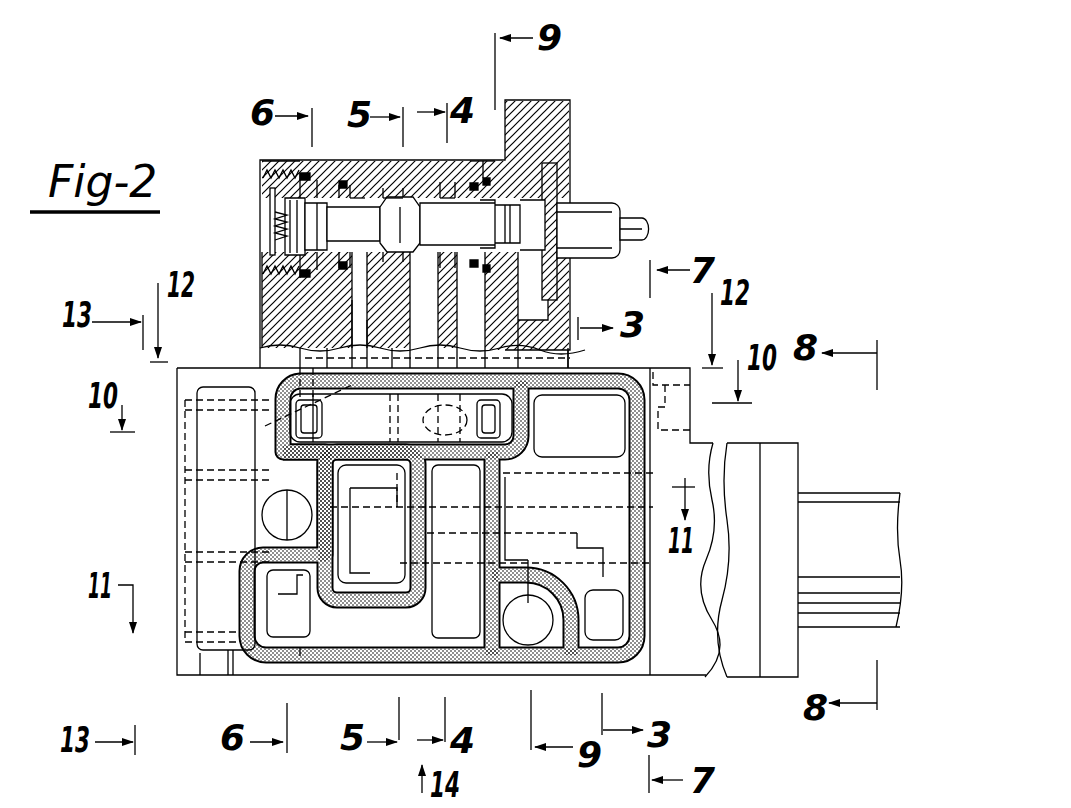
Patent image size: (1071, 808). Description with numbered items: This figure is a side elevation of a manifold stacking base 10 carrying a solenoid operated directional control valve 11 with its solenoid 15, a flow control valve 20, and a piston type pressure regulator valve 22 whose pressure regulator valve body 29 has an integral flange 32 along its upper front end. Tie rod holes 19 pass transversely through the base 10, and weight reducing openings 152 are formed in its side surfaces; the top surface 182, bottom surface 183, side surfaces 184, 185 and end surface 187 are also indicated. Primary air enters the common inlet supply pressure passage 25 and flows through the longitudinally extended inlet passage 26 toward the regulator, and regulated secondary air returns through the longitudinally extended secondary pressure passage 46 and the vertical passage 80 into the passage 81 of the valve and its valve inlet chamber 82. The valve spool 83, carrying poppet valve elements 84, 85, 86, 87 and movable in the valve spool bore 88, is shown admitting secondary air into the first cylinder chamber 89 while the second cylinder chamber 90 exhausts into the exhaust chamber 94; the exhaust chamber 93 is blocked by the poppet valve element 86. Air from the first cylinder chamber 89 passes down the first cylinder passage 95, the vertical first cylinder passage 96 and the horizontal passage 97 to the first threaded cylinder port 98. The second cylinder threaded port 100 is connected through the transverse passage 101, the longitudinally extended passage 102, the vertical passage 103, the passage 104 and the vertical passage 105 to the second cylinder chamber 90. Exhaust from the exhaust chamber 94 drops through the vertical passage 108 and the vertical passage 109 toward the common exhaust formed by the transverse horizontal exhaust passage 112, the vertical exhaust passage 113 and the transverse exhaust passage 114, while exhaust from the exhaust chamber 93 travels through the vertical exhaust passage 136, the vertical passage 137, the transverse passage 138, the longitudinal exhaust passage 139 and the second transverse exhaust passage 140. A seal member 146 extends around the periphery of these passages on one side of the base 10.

The manifold stacking base 10 is at (172, 668).
The solenoid operated directional control valve 11 is at (258, 179).
The solenoid 15 is at (606, 196).
The tie rod holes 19 is at (262, 519).
The flow control valve 20 is at (665, 395).
The pressure regulator valve 22 is at (789, 438).
The common inlet supply pressure passage 25 is at (380, 585).
The longitudinally extended inlet passage 26 is at (452, 560).
The pressure regulator valve body 29 is at (743, 442).
The integral flange 32 is at (686, 374).
The longitudinally extended secondary pressure passage 46 is at (597, 463).
The vertical passage 80 is at (397, 518).
The passage 81 is at (353, 343).
The valve inlet chamber 82 is at (452, 200).
The valve spool 83 is at (406, 210).
The poppet valve element 84 is at (305, 243).
The poppet valve element 85 is at (462, 224).
The poppet valve element 86 is at (330, 226).
The poppet valve element 87 is at (590, 224).
The valve spool bore 88 is at (395, 192).
The first cylinder chamber 89 is at (357, 183).
The second cylinder chamber 90 is at (480, 160).
The exhaust chamber 93 is at (300, 163).
The exhaust chamber 94 is at (490, 160).
The first cylinder passage 95 is at (357, 327).
The vertical first cylinder passage 96 is at (265, 426).
The horizontal passage 97 is at (268, 440).
The first threaded cylinder port 98 is at (197, 392).
The second cylinder threaded port 100 is at (177, 560).
The transverse passage 101 is at (280, 608).
The longitudinally extended passage 102 is at (338, 632).
The vertical passage 103 is at (468, 505).
The passage 104 is at (510, 475).
The vertical passage 105 is at (540, 340).
The vertical passage 108 is at (515, 327).
The vertical passage 109 is at (540, 400).
The transverse horizontal exhaust passage 112 is at (583, 440).
The vertical exhaust passage 113 is at (618, 458).
The transverse exhaust passage 114 is at (600, 610).
The vertical exhaust passage 136 is at (307, 307).
The vertical passage 137 is at (305, 358).
The transverse passage 138 is at (318, 422).
The longitudinal exhaust passage 139 is at (273, 458).
The second transverse exhaust passage 140 is at (401, 405).
The seal member 146 is at (613, 658).
The weight reducing openings 152 is at (182, 498).
The top surface 182 is at (192, 368).
The bottom surface 183 is at (190, 677).
The side surface 184 is at (177, 622).
The side surface 185 is at (694, 675).
The end surface 187 is at (238, 664).